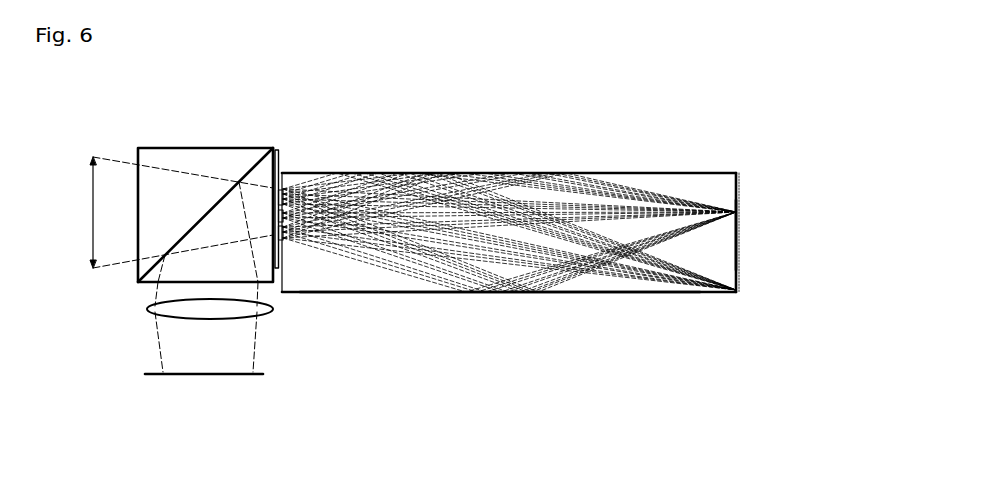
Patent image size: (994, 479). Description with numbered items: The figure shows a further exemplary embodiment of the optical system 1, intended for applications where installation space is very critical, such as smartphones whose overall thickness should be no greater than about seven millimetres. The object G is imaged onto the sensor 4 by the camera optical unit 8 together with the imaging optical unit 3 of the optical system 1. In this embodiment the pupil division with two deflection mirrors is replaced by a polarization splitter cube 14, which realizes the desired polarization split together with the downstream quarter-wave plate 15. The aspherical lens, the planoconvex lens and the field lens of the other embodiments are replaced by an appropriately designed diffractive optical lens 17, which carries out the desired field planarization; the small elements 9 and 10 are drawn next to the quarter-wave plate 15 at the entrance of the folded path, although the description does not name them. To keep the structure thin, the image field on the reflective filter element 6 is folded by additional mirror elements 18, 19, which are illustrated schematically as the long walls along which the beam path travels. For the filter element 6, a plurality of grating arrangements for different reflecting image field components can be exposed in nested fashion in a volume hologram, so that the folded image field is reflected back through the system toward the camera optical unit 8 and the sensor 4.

The optical system 1 is at (650, 292).
The imaging optical unit 3 is at (738, 195).
The sensor 4 is at (238, 374).
The reflective filter element 6 is at (738, 258).
The camera optical unit 8 is at (266, 313).
The light source element 9 is at (283, 195).
The light source element 10 is at (283, 216).
The polarization splitter cube 14 is at (220, 148).
The quarter-wave plate 15 is at (278, 163).
The diffractive optical lens 17 is at (284, 233).
The mirror element 18 is at (388, 173).
The mirror element 19 is at (447, 292).
The object G is at (92, 207).